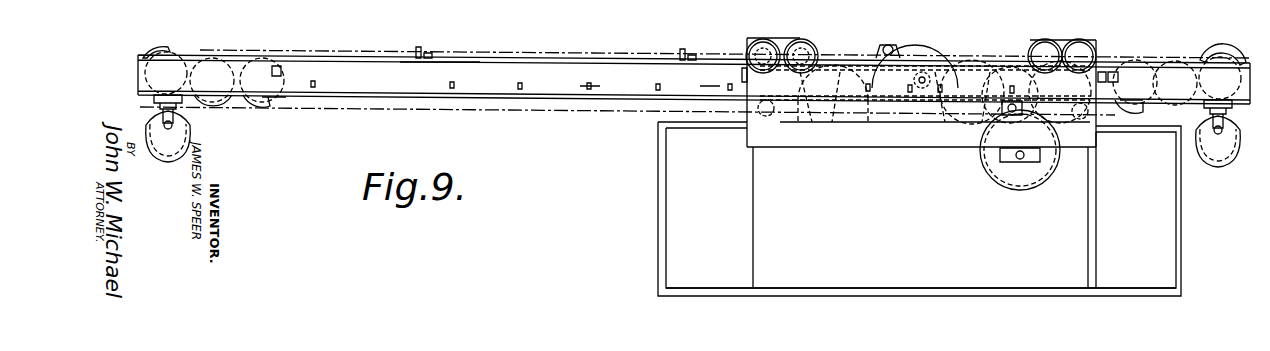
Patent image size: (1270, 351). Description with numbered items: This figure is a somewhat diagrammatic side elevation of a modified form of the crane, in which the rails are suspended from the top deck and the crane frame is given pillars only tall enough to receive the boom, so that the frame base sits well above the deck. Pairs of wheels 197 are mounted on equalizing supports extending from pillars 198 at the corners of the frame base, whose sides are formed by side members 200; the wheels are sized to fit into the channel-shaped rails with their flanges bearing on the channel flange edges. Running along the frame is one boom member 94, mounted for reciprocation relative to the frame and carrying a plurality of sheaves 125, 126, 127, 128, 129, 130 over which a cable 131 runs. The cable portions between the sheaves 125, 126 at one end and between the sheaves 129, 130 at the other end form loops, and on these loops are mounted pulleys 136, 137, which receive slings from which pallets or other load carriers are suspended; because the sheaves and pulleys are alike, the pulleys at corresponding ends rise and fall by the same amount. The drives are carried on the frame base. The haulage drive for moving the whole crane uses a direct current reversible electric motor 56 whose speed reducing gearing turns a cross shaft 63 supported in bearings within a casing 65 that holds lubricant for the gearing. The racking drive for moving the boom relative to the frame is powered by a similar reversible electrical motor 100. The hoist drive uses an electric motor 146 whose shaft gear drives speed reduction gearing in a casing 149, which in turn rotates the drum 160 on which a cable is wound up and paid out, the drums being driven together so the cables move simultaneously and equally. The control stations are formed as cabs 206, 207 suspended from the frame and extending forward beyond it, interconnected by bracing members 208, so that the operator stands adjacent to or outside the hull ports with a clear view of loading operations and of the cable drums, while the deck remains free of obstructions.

The boom member 94 is at (506, 62).
The cable 131 is at (394, 52).
The sheave 125 is at (175, 52).
The sheave 126 is at (222, 72).
The sheave 127 is at (278, 100).
The sheave 128 is at (1125, 68).
The sheave 129 is at (1177, 66).
The sheave 130 is at (1220, 58).
The pulley 136 is at (183, 127).
The pulley 137 is at (1214, 162).
The wheels 197 is at (806, 40).
The pillar 198 is at (742, 77).
The electric motor 146 is at (1050, 60).
The casing 149 is at (1010, 68).
The cross shaft 63 is at (888, 45).
The casing 65 is at (932, 48).
The electric motor 56 is at (985, 60).
The electrical motor 100 is at (830, 135).
The side member 200 is at (905, 142).
The cab 206 is at (735, 214).
The cab 207 is at (1160, 243).
The bracing members 208 is at (888, 290).
The drum 160 is at (1012, 175).